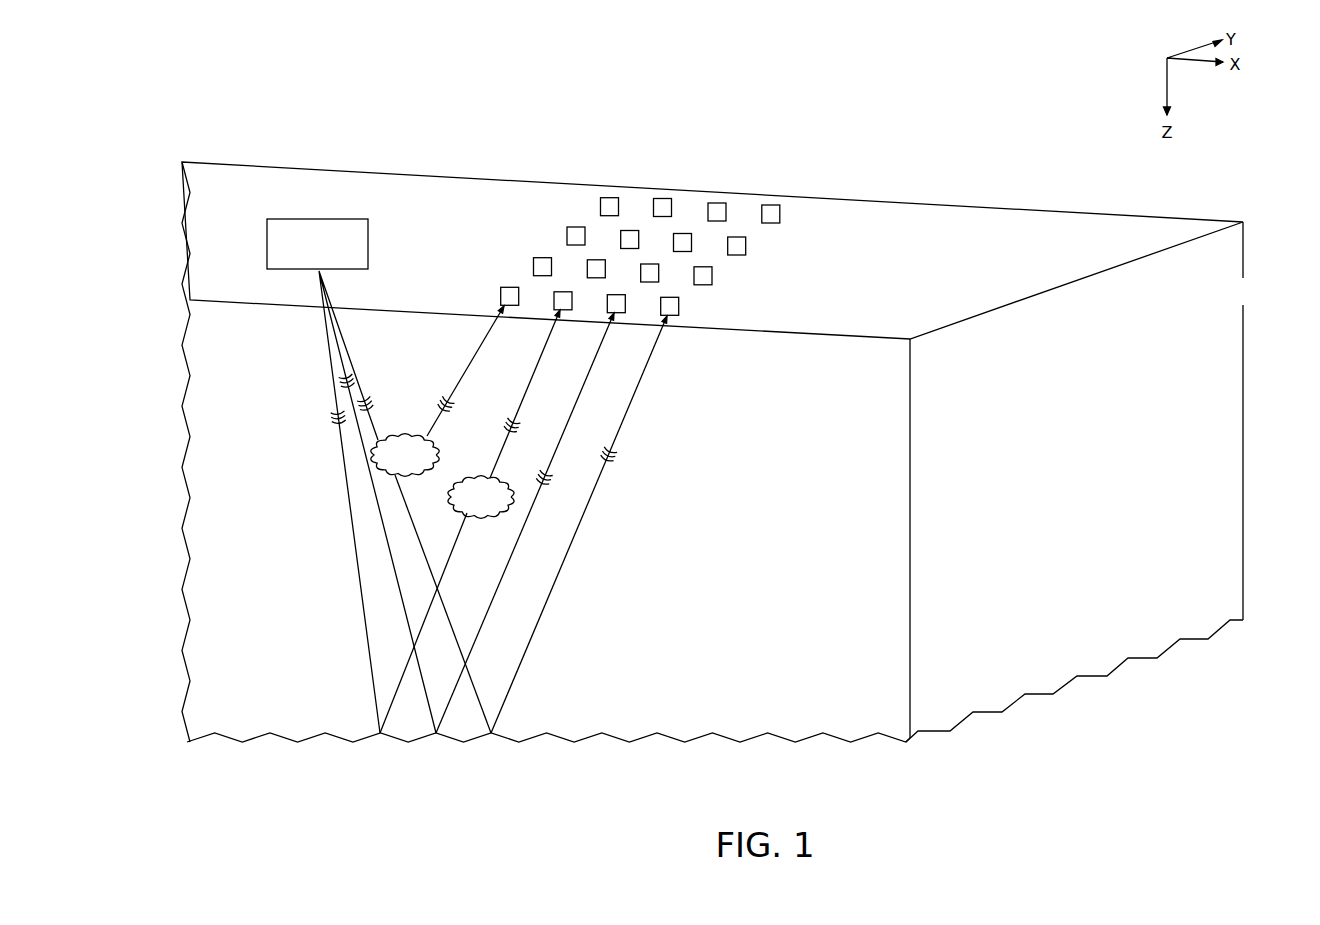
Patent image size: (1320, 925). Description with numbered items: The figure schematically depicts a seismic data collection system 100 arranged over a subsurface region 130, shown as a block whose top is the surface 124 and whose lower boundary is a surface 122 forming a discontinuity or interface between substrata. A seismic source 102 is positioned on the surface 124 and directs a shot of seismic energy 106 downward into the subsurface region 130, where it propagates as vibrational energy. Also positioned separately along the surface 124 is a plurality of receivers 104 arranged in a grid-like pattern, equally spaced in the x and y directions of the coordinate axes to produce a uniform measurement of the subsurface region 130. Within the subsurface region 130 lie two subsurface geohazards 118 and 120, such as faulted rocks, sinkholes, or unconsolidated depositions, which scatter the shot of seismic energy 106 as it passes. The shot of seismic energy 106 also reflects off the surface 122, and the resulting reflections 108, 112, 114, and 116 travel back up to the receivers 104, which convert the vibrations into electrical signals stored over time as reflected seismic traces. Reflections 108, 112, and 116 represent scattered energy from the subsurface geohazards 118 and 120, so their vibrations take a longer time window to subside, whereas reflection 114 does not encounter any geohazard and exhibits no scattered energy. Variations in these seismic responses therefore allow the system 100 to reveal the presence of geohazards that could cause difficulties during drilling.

The seismic data collection system 100 is at (95, 127).
The seismic source 102 is at (290, 232).
The plurality of receivers 104 is at (612, 198).
The shot of seismic energy 106 is at (326, 362).
The reflection 108 is at (490, 341).
The reflection 112 is at (548, 344).
The reflection 114 is at (602, 348).
The reflection 116 is at (655, 353).
The subsurface geohazard 118 is at (436, 447).
The subsurface geohazard 120 is at (473, 508).
The surface 122 is at (714, 733).
The surface 124 is at (423, 187).
The subsurface region 130 is at (1228, 312).